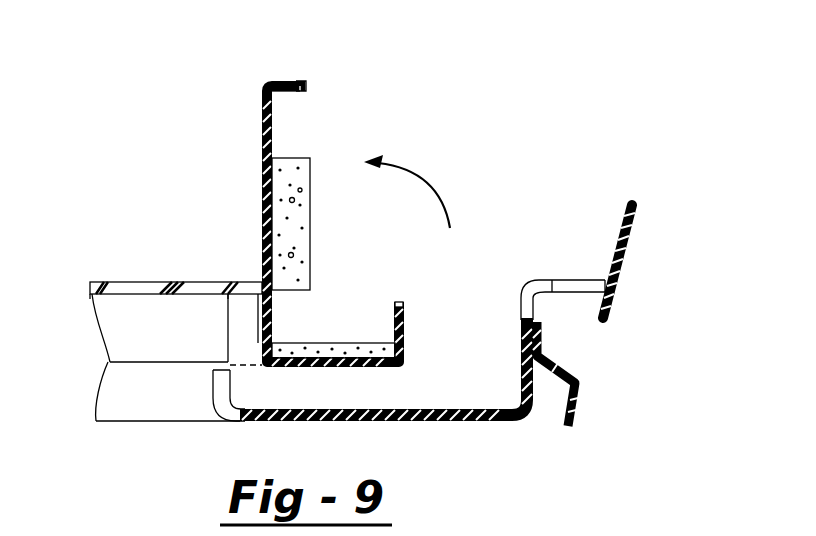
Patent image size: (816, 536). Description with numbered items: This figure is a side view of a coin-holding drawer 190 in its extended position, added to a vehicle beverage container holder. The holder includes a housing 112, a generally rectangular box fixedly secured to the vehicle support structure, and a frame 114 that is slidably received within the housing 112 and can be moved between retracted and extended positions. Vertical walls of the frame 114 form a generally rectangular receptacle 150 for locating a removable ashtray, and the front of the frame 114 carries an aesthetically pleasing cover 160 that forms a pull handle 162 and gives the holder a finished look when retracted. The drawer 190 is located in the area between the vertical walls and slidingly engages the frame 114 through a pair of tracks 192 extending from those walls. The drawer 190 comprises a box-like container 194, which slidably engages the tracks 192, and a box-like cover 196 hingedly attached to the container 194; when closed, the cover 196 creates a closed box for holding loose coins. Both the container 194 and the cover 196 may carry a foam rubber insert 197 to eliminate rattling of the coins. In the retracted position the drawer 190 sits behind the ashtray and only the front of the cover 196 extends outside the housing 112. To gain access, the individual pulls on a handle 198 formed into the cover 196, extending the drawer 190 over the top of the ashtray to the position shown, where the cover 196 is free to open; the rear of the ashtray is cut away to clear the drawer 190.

The housing 112 is at (186, 286).
The frame 114 is at (112, 401).
The rectangular receptacle 150 is at (463, 378).
The cover 160 is at (628, 247).
The pull handle 162 is at (600, 302).
The drawer 190 is at (352, 372).
The tracks 192 is at (168, 365).
The container 194 is at (404, 332).
The cover 196 is at (293, 80).
The foam rubber insert 197 is at (305, 176).
The handle 198 is at (290, 95).